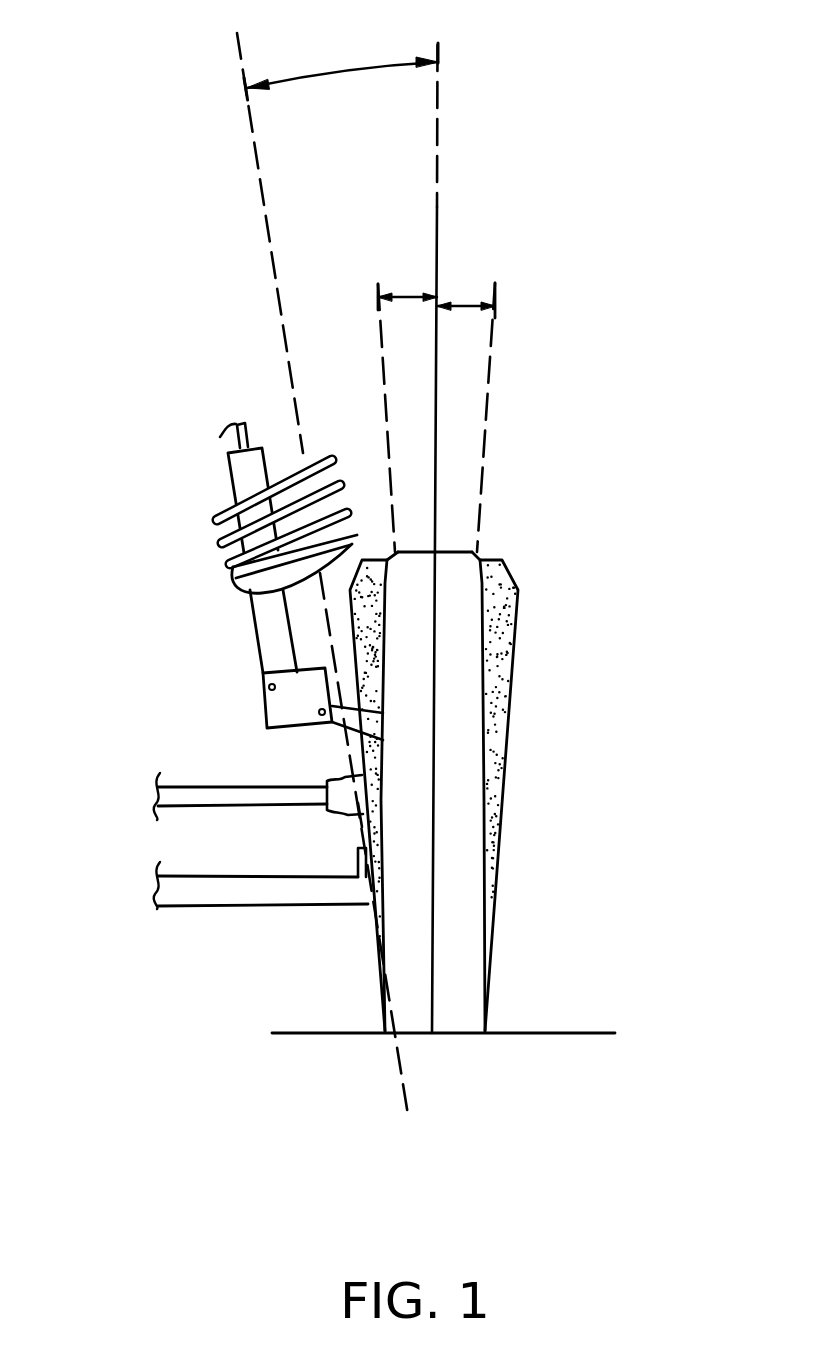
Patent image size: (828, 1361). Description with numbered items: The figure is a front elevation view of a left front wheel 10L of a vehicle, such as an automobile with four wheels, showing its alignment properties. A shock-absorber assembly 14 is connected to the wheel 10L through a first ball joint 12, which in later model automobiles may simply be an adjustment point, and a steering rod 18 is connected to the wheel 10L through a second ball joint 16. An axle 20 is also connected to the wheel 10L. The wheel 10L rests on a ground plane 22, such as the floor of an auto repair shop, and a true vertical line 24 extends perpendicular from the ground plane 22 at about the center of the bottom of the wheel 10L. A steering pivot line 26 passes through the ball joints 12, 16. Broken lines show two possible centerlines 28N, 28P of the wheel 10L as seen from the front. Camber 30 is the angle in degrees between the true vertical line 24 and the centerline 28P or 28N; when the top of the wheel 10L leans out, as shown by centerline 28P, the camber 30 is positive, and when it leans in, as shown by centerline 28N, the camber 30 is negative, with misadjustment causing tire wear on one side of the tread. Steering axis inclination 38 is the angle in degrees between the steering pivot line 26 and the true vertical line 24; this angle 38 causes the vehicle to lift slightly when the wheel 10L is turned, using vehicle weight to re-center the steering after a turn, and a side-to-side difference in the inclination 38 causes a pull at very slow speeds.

The left front wheel 10L is at (484, 1030).
The first ball joint 12 is at (332, 722).
The shock-absorber assembly 14 is at (270, 610).
The second ball joint 16 is at (370, 903).
The steering rod 18 is at (178, 908).
The axle 20 is at (177, 807).
The ground plane 22 is at (605, 1033).
The true vertical line 24 is at (439, 212).
The steering pivot line 26 is at (275, 272).
The centerline (negative camber) 28N is at (382, 354).
The centerline (positive camber) 28P is at (483, 443).
The camber 30 is at (407, 290).
The steering axis inclination 38 is at (350, 62).